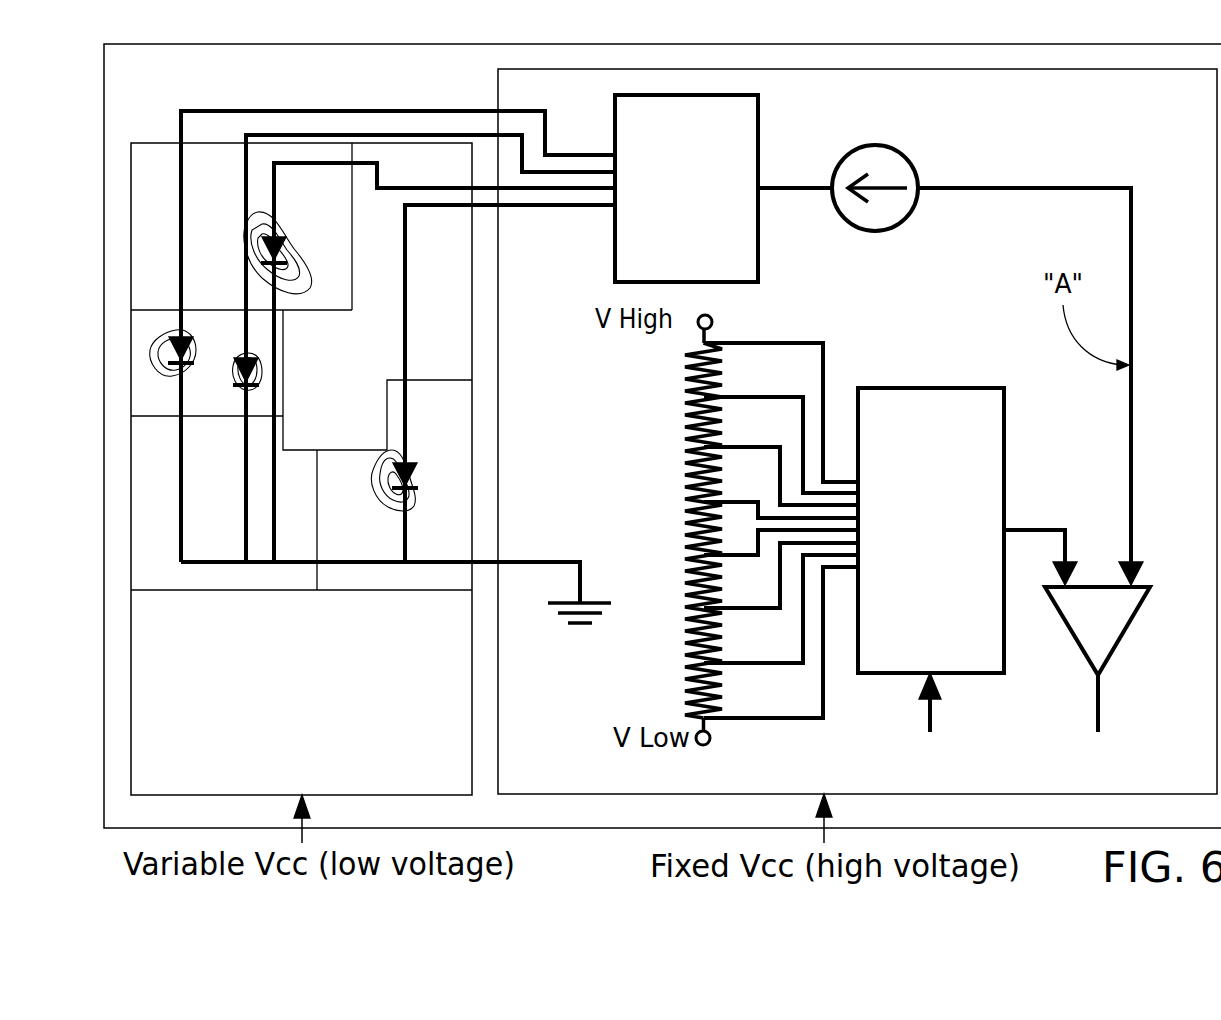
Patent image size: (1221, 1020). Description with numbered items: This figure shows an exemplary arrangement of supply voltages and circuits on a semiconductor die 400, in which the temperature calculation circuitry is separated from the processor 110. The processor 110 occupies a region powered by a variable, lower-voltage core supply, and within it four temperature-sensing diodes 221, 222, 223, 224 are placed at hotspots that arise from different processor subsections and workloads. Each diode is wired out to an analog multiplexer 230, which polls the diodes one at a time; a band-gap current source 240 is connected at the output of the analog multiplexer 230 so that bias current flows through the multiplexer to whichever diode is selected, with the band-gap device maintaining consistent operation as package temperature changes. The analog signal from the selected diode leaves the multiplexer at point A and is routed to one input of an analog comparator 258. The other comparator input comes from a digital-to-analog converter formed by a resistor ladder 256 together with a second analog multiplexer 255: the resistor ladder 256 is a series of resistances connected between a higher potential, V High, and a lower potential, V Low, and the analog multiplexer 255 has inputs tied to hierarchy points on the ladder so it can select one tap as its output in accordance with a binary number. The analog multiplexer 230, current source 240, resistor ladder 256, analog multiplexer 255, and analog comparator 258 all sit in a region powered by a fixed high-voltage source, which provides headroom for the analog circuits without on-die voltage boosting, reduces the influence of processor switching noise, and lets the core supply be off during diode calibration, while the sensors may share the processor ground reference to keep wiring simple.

The semiconductor die 400 is at (662, 417).
The processor 110 is at (145, 143).
The diode 221 is at (414, 472).
The diode 222 is at (288, 253).
The diode 223 is at (227, 383).
The diode 224 is at (191, 344).
The analog multiplexer 230 is at (723, 188).
The band-gap current source 240 is at (876, 146).
The analog multiplexer 255 is at (967, 560).
The resistor ladder 256 is at (665, 528).
The analog comparator 258 is at (1065, 627).